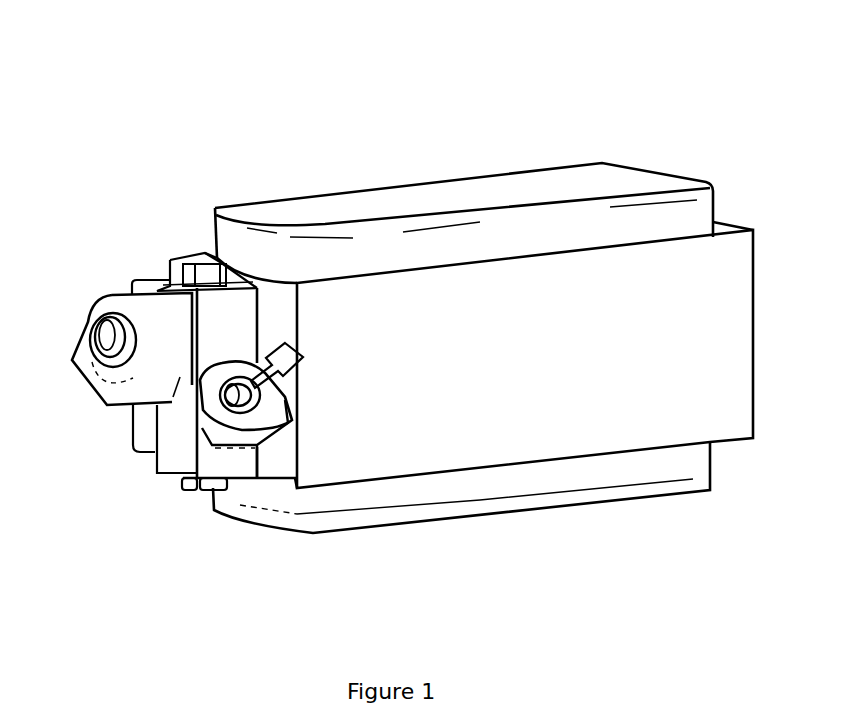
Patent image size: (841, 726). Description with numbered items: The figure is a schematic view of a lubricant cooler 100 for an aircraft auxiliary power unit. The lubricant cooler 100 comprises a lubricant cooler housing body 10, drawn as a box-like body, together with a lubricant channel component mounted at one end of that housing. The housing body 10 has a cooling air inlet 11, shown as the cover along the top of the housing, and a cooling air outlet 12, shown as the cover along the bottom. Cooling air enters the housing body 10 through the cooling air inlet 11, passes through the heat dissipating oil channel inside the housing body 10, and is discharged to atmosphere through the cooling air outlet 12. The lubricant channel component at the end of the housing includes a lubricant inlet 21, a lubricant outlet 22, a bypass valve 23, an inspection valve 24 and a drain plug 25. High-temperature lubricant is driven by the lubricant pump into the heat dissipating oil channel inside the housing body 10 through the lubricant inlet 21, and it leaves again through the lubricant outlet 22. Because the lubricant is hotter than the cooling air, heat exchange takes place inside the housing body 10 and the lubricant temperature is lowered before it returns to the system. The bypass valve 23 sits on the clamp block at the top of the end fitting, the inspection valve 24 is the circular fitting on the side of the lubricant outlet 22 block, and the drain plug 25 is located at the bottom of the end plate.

The lubricant cooler 100 is at (732, 197).
The lubricant cooler housing body 10 is at (755, 312).
The cooling air inlet 11 is at (503, 152).
The cooling air outlet 12 is at (577, 500).
The lubricant inlet 21 is at (272, 410).
The lubricant outlet 22 is at (100, 410).
The bypass valve 23 is at (185, 253).
The inspection valve 24 is at (86, 330).
The drain plug 25 is at (205, 487).